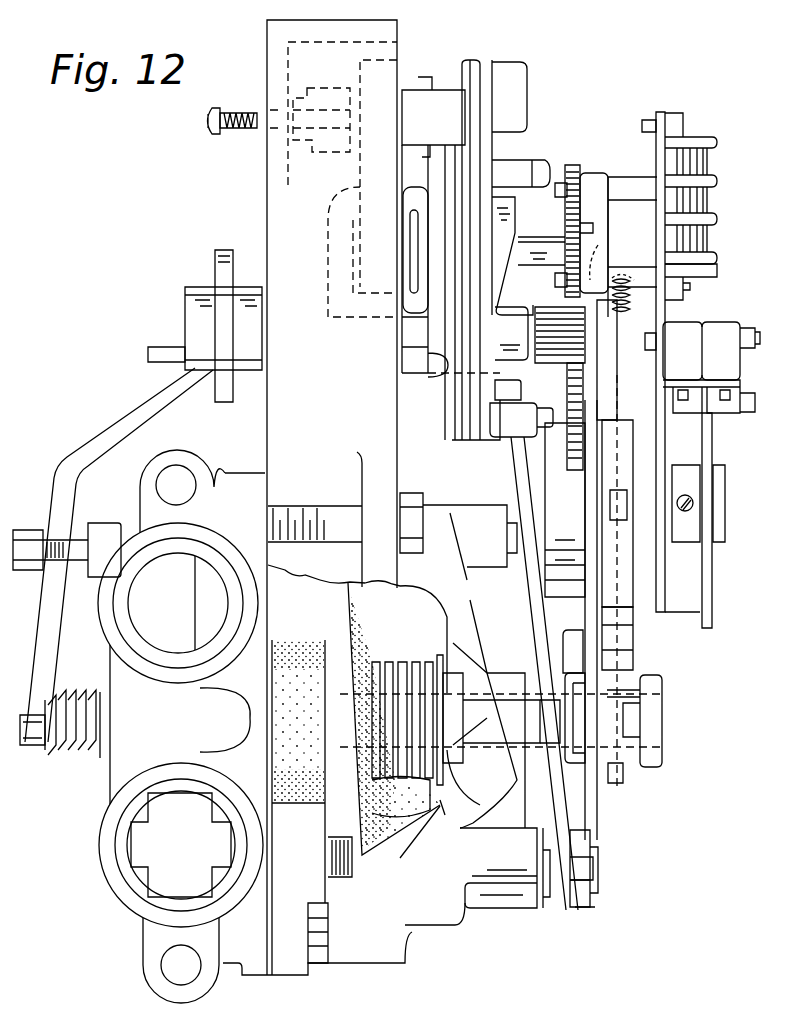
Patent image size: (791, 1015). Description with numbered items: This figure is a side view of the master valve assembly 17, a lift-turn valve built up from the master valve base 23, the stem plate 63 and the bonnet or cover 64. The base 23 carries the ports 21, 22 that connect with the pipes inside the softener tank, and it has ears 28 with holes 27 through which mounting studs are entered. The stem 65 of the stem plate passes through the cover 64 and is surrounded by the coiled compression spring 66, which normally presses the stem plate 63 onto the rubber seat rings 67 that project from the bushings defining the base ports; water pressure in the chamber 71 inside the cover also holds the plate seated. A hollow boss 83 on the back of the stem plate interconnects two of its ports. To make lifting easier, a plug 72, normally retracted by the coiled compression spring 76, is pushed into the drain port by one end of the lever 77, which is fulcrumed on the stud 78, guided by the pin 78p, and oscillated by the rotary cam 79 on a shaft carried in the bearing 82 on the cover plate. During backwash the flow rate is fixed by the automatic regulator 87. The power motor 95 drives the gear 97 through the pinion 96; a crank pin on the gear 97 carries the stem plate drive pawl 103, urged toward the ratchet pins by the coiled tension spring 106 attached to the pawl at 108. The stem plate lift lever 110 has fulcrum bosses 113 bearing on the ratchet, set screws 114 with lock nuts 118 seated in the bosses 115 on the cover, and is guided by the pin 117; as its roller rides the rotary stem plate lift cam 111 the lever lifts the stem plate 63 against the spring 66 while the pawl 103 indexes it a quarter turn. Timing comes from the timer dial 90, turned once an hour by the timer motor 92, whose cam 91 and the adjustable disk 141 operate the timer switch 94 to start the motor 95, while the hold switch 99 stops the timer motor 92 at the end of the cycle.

The master valve assembly 17 is at (456, 936).
The port 21 is at (170, 640).
The port 22 is at (148, 858).
The master valve base 23 is at (110, 782).
The holes 27 is at (172, 486).
The ears 28 is at (162, 458).
The stem plate 63 is at (352, 824).
The bonnet or cover 64 is at (372, 966).
The stem 65 is at (388, 665).
The coiled compression spring 66 is at (401, 797).
The rubber seat rings 67 is at (293, 805).
The chamber 71 is at (440, 830).
The plug 72 is at (70, 748).
The coiled compression spring 76 is at (93, 700).
The lever 77 is at (45, 615).
The stud 78 is at (72, 563).
The pin 78p is at (150, 356).
The rotary cam 79 is at (225, 404).
The bearing 82 is at (418, 375).
The hollow boss 83 is at (455, 795).
The automatic regulator 87 is at (158, 878).
The timer dial 90 is at (722, 590).
The cam 91 is at (728, 496).
The timer motor 92 is at (580, 592).
The timer switch 94 is at (730, 322).
The power motor 95 is at (480, 62).
The pinion 96 is at (541, 310).
The gear 97 is at (570, 166).
The hold switch 99 is at (680, 324).
The stem plate drive pawl 103 is at (612, 372).
The coiled tension spring 106 is at (640, 278).
The attachment point of spring to pawl 108 is at (598, 240).
The stem plate lift lever 110 is at (530, 615).
The rotary stem plate lift cam 111 is at (510, 218).
The fulcrum bosses 113 is at (552, 672).
The set screws 114 is at (600, 855).
The bosses 115 is at (517, 908).
The pin 117 is at (513, 556).
The lock nuts 118 is at (595, 905).
The disk 141 is at (697, 618).